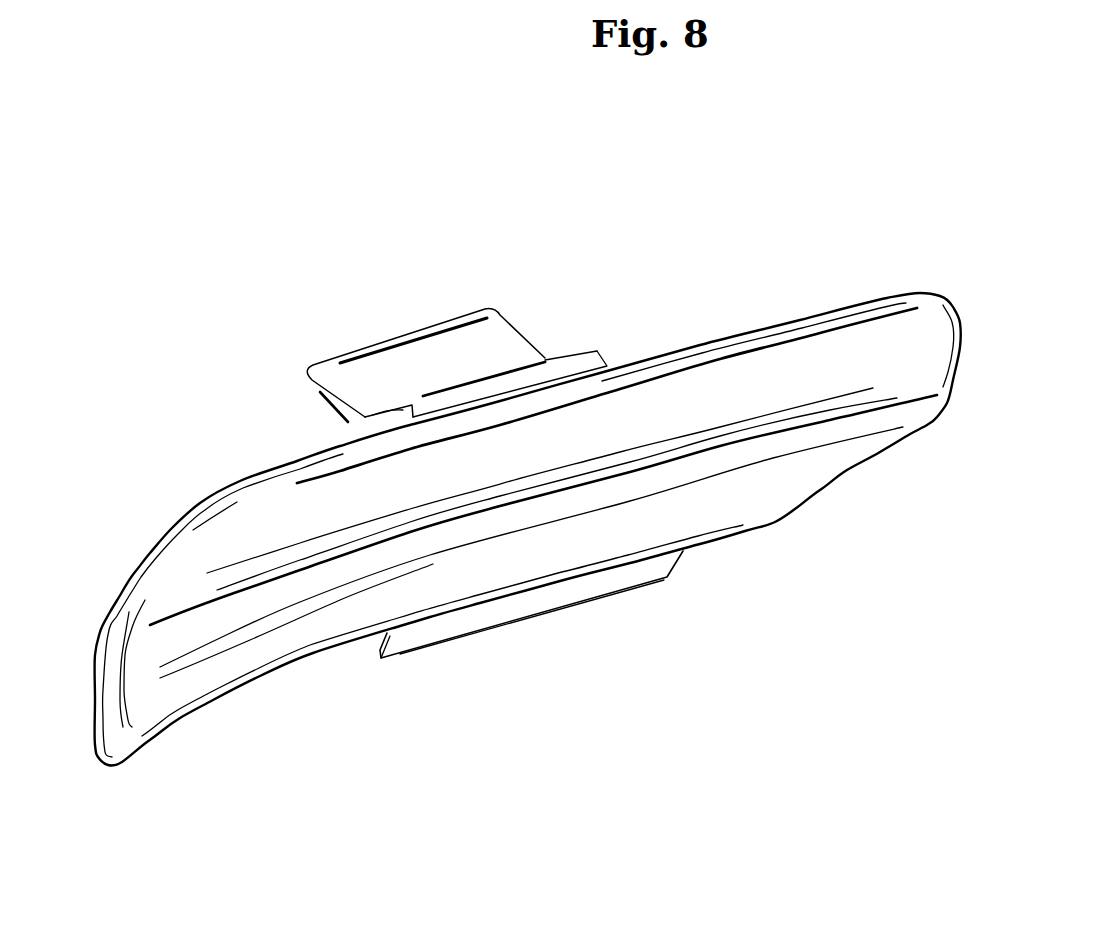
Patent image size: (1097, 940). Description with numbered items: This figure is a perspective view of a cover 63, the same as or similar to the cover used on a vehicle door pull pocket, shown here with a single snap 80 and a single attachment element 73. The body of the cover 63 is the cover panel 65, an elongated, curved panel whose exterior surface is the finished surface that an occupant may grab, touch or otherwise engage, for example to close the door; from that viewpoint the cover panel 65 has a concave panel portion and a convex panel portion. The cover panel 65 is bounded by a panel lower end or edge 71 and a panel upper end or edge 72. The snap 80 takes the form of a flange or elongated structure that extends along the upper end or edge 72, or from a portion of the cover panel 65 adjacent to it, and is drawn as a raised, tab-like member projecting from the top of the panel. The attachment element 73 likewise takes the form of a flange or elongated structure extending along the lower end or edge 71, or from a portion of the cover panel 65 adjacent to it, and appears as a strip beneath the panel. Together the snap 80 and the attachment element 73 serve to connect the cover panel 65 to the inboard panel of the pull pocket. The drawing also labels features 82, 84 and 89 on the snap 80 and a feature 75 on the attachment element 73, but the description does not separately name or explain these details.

The cover 63 is at (125, 532).
The cover panel 65 is at (320, 634).
The panel lower end or edge 71 is at (212, 700).
The panel upper end or edge 72 is at (253, 477).
The attachment element 73 is at (542, 627).
The flange face 75 is at (615, 588).
The snap 80 is at (411, 316).
The clip ledge 82 is at (573, 348).
The ledge end 84 is at (613, 352).
The clip fold 89 is at (517, 312).